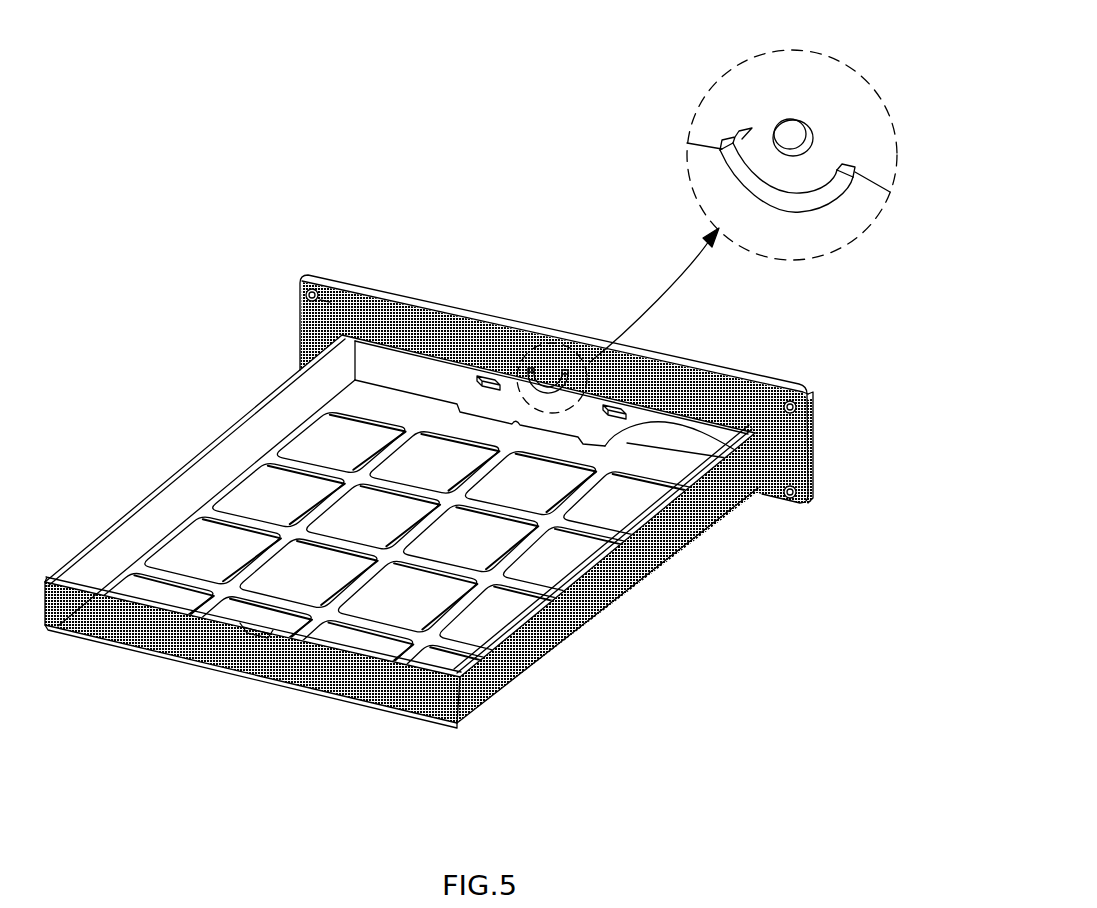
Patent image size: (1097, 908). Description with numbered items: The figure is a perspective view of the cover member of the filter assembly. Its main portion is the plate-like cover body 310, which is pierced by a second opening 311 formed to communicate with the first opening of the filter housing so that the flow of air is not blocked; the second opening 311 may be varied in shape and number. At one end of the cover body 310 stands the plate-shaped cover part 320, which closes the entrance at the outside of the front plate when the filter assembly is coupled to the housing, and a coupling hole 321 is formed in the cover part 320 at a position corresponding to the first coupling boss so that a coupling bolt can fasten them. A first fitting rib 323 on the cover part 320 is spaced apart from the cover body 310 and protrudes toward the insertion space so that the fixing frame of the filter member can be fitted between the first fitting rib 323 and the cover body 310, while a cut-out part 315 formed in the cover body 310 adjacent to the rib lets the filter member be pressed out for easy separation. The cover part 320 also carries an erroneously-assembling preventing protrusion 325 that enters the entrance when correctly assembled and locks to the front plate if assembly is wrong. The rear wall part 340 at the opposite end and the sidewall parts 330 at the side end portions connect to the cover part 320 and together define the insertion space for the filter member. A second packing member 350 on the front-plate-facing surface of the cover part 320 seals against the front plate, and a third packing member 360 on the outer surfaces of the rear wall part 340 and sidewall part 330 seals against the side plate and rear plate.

The cover body 310 is at (393, 568).
The second opening 311 is at (492, 532).
The cut-out part 315 is at (757, 453).
The cover part 320 is at (661, 432).
The coupling hole 321 is at (309, 292).
The first fitting rib 323 is at (489, 372).
The erroneously-assembling preventing protrusion 325 is at (546, 370).
The sidewall part 330 is at (204, 472).
The rear wall part 340 is at (188, 614).
The second packing member 350 is at (747, 395).
The third packing member 360 is at (522, 650).